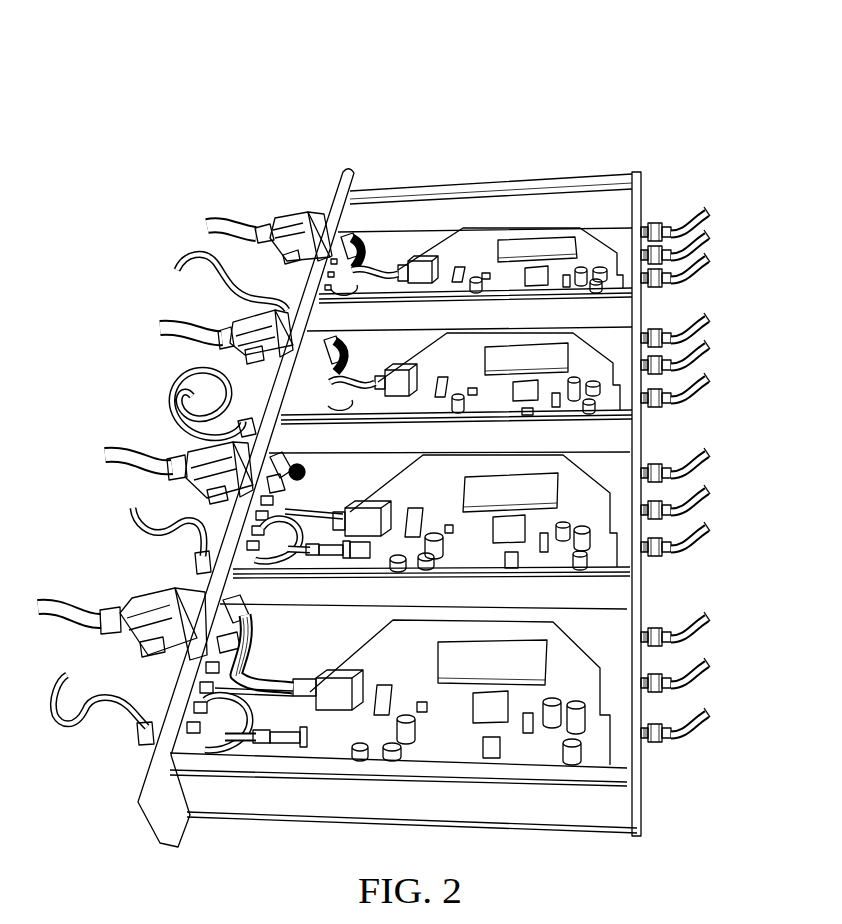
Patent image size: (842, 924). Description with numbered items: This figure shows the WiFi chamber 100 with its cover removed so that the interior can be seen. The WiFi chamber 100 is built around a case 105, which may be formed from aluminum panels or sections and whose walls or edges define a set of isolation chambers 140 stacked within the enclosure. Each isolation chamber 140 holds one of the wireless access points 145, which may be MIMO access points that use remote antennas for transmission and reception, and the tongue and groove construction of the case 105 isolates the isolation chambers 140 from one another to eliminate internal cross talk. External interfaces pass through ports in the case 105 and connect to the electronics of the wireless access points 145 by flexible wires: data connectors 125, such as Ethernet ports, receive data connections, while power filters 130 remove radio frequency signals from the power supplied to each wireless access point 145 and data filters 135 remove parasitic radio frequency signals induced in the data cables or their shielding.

The WiFi chamber 100 is at (82, 62).
The case 105 is at (566, 176).
The data connectors 125 is at (178, 660).
The power filters 130 is at (273, 512).
The data filters 135 is at (232, 318).
The isolation chambers 140 is at (622, 212).
The wireless access points 145 is at (448, 500).